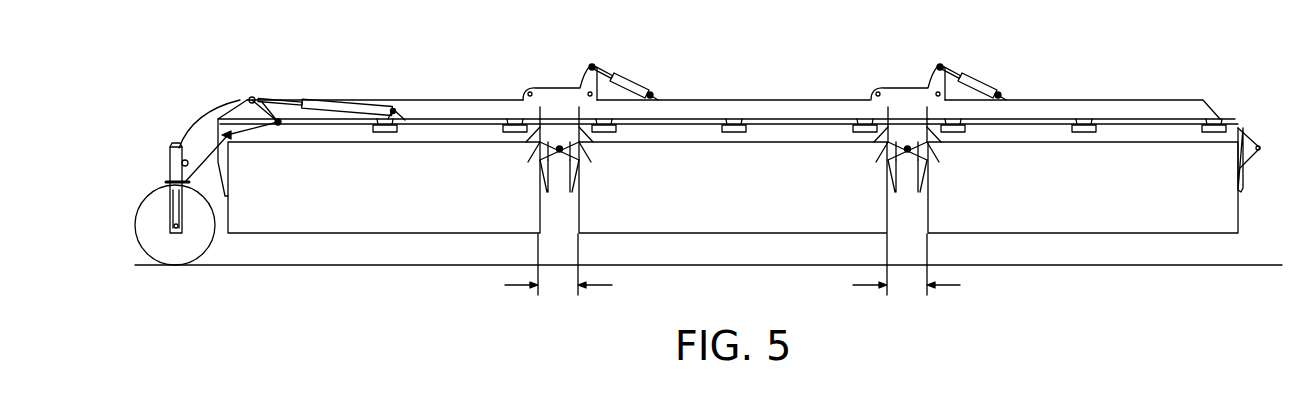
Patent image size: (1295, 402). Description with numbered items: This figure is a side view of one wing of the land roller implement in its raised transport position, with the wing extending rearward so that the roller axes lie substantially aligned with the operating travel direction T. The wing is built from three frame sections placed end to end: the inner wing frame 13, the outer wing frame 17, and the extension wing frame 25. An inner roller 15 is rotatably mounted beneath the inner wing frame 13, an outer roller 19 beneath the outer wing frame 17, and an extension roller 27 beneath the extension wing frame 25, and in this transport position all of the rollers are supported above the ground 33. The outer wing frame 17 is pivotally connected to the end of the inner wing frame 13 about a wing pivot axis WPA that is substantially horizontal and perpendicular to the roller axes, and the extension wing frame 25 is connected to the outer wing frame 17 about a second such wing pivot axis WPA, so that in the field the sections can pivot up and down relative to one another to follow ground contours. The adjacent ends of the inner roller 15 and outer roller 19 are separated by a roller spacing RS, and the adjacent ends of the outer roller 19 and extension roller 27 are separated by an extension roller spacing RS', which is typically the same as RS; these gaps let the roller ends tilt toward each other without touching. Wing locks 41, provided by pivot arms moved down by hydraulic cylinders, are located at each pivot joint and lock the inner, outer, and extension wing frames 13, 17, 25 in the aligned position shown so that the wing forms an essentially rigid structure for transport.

The inner wing frame 13 is at (1085, 98).
The inner roller 15 is at (1128, 234).
The outer wing frame 17 is at (763, 98).
The outer roller 19 is at (783, 234).
The extension wing frame 25 is at (418, 98).
The extension roller 27 is at (383, 234).
The ground 33 is at (1257, 265).
The wing lock 41 is at (554, 82).
The wing pivot axis WPA is at (928, 151).
The roller spacing RS is at (925, 267).
The extension roller spacing RS' is at (580, 267).
The operating travel direction T is at (1202, 57).